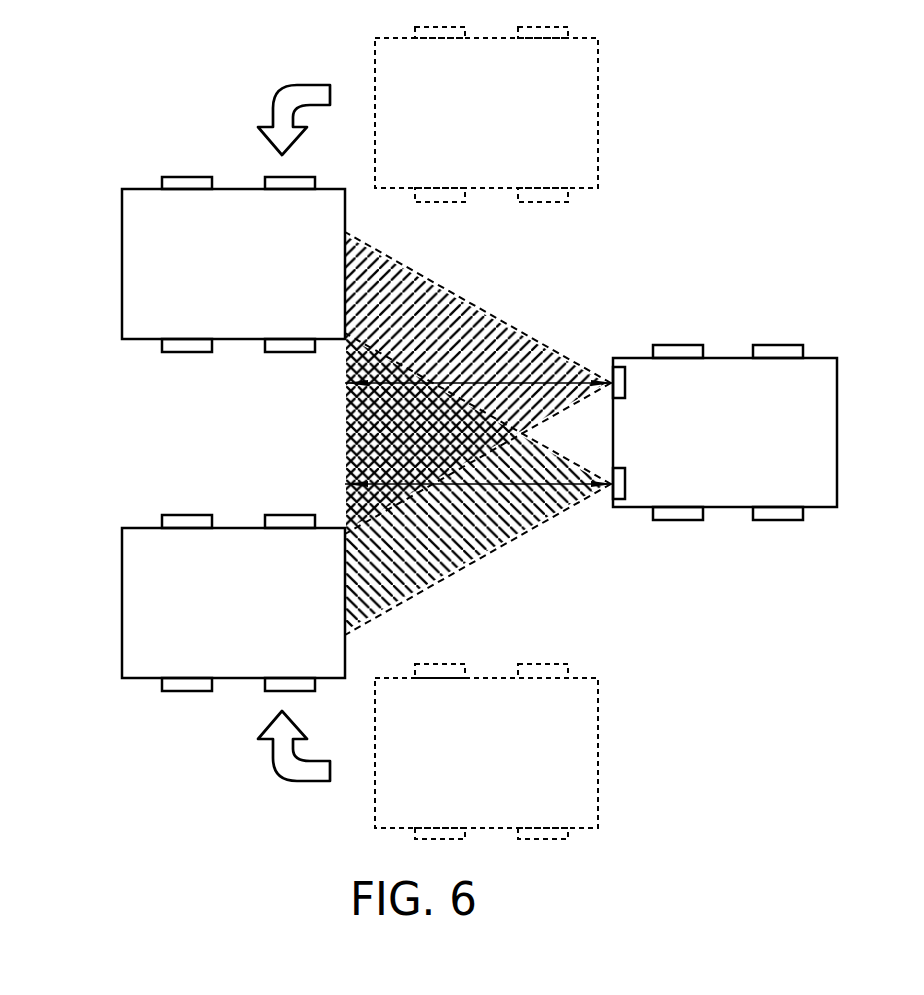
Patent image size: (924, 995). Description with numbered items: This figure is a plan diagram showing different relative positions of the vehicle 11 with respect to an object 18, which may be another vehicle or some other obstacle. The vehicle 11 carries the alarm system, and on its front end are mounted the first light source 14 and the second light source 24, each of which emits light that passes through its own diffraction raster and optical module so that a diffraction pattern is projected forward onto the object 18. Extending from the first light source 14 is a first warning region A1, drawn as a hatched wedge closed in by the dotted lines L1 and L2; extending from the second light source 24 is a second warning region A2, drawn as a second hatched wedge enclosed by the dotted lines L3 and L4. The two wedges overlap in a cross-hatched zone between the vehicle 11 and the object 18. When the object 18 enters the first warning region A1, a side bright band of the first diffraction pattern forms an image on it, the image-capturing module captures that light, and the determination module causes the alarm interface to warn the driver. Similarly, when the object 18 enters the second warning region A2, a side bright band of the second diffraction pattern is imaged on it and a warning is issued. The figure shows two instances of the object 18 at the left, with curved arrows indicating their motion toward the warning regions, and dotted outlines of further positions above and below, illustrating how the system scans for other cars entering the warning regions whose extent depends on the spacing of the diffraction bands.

The vehicle 11 is at (816, 342).
The first light source 14 is at (619, 372).
The second light source 24 is at (618, 494).
The object 18 is at (147, 176).
The dotted line L1 is at (455, 292).
The dotted line L2 is at (548, 422).
The dotted line L3 is at (383, 353).
The dotted line L4 is at (453, 574).
The first warning region A1 is at (465, 352).
The second warning region A2 is at (466, 537).